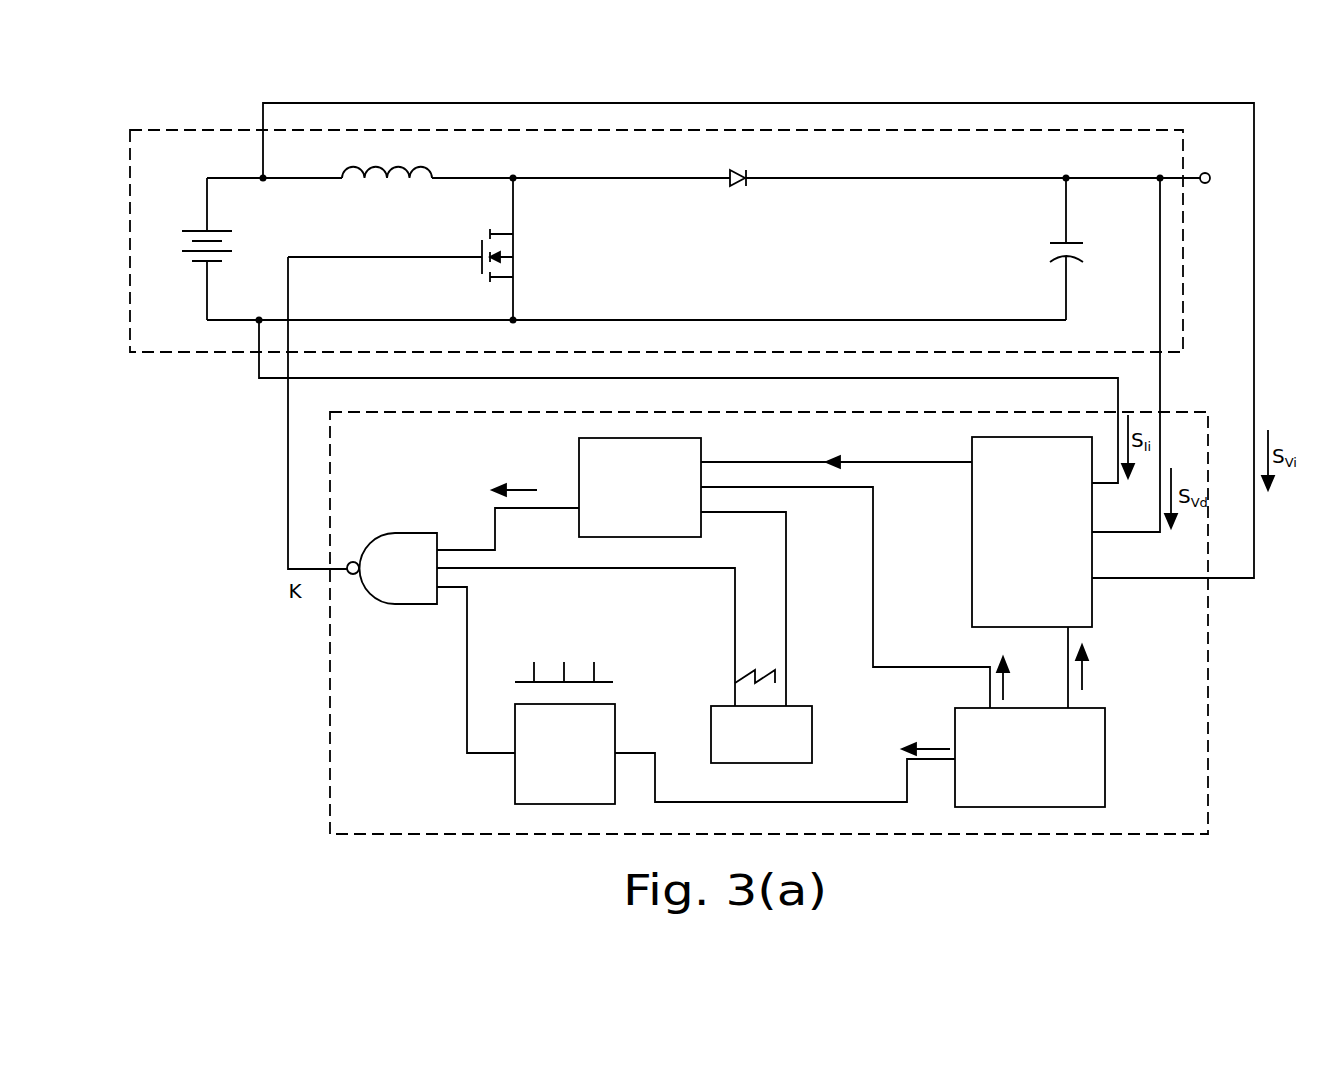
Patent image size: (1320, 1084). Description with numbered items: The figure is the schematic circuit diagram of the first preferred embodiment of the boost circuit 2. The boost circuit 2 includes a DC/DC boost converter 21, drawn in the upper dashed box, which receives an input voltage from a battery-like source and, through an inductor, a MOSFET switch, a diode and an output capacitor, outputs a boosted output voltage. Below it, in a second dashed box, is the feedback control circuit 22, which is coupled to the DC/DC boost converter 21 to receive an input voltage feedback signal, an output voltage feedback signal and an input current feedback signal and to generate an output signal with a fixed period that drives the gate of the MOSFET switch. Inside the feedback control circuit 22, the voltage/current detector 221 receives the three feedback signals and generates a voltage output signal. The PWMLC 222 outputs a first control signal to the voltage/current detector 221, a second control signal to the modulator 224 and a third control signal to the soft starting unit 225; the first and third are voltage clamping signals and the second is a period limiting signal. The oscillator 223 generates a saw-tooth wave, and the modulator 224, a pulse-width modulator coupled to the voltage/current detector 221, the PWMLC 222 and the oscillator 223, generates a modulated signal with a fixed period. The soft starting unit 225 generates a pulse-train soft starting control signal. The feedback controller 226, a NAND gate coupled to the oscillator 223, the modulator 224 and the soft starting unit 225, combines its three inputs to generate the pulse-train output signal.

The boost circuit 2 is at (1226, 82).
The DC/DC boost converter 21 is at (1165, 152).
The feedback control circuit 22 is at (353, 735).
The voltage/current detector 221 is at (978, 528).
The PWMLC 222 is at (1098, 745).
The oscillator 223 is at (805, 718).
The modulator 224 is at (700, 452).
The soft starting unit 225 is at (518, 777).
The feedback controller 226 is at (410, 543).